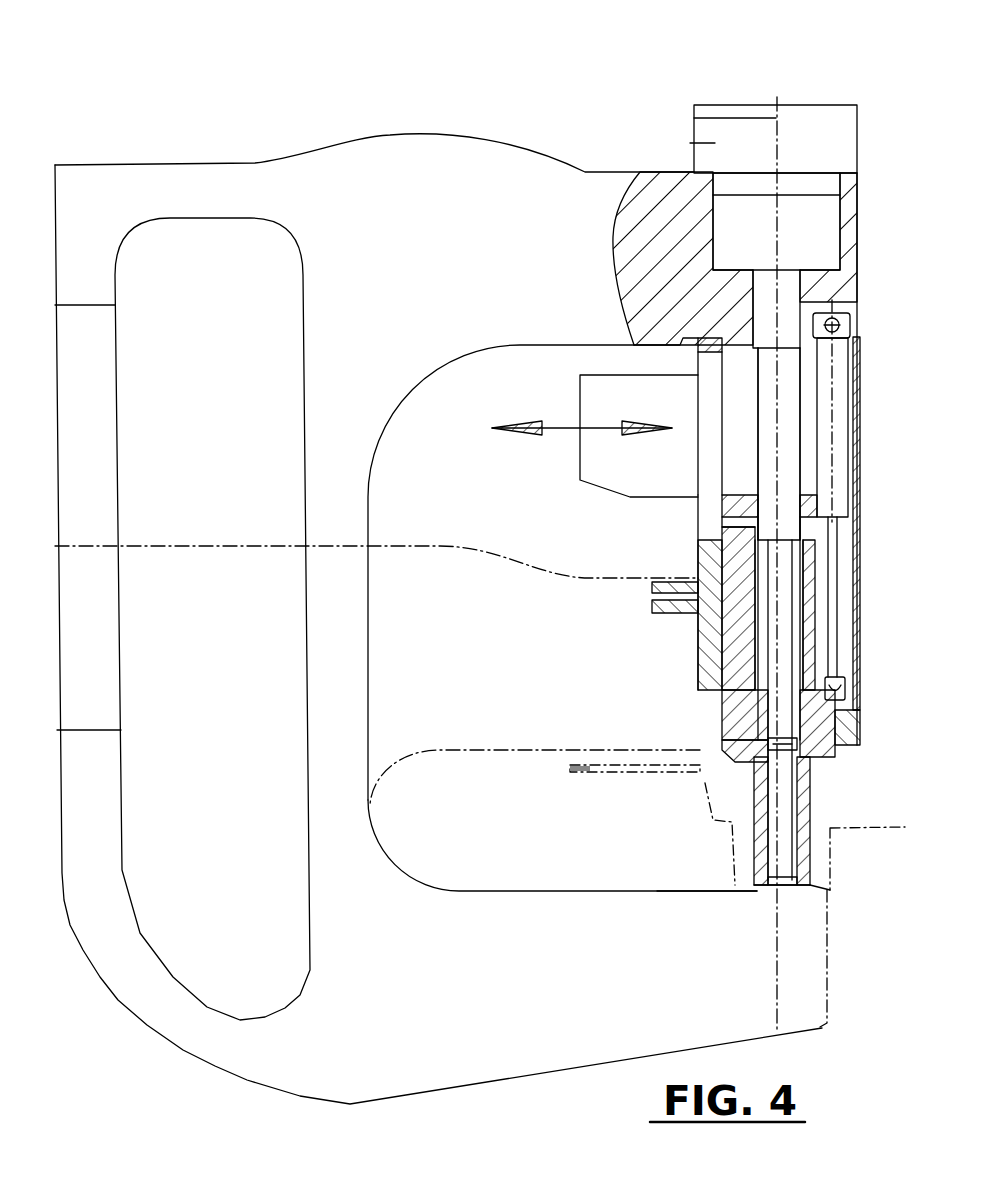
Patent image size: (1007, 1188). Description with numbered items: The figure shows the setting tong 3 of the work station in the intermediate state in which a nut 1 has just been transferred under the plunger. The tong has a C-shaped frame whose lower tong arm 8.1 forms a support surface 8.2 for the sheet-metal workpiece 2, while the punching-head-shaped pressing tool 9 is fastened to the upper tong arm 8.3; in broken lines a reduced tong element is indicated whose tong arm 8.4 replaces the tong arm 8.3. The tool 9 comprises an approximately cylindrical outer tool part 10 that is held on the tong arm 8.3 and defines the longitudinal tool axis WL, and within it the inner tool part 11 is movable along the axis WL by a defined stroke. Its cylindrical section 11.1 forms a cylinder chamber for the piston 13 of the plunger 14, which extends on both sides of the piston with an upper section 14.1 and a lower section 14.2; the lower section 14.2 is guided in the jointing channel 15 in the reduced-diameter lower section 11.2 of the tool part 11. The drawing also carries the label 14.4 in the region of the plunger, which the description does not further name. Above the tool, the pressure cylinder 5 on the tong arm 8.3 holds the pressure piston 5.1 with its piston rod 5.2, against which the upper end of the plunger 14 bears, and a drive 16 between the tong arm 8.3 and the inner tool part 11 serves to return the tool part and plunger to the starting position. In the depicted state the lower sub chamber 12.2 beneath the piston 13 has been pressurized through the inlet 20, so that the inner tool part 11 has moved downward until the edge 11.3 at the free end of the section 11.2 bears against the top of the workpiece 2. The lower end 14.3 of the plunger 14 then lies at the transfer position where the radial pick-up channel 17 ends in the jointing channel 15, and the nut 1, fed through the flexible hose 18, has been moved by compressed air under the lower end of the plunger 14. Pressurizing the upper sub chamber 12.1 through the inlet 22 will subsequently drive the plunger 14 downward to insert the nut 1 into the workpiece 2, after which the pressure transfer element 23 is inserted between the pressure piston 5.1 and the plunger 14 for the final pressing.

The nut 1 is at (752, 773).
The workpiece 2 is at (618, 770).
The setting tong 3 is at (222, 152).
The pressure cylinder 5 is at (668, 262).
The pressure piston 5.1 is at (735, 210).
The piston rod 5.2 is at (790, 281).
The tong arm 8.1 is at (540, 900).
The support surface 8.2 is at (757, 891).
The tong arm 8.3 is at (498, 333).
The tong arm 8.4 is at (525, 515).
The pressing tool 9 is at (578, 632).
The outer tool part 10 is at (690, 628).
The inner tool part 11 is at (700, 665).
The cylindrical section 11.1 is at (720, 548).
The lower section 11.2 is at (812, 788).
The edge 11.3 is at (813, 890).
The upper sub chamber 12.1 is at (807, 507).
The lower sub chamber 12.2 is at (805, 632).
The piston 13 is at (807, 537).
The plunger 14 is at (803, 466).
The upper section 14.1 is at (800, 396).
The lower section 14.2 is at (790, 585).
The lower end 14.3 is at (853, 712).
The cylinder 14.4 is at (735, 397).
The jointing channel 15 is at (790, 855).
The drive 16 is at (840, 519).
The pick-up channel 17 is at (718, 757).
The flexible hose 18 is at (650, 607).
The inlet 20 is at (700, 715).
The inlet 22 is at (740, 514).
The pressure transfer element 23 is at (605, 465).
The longitudinal tool axis WL is at (776, 120).